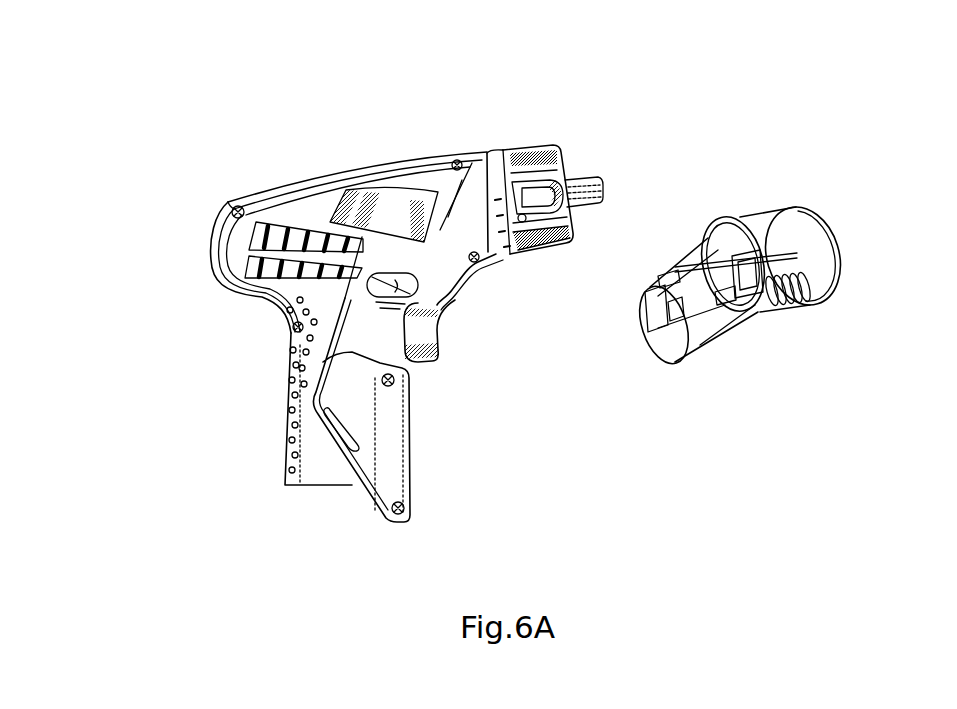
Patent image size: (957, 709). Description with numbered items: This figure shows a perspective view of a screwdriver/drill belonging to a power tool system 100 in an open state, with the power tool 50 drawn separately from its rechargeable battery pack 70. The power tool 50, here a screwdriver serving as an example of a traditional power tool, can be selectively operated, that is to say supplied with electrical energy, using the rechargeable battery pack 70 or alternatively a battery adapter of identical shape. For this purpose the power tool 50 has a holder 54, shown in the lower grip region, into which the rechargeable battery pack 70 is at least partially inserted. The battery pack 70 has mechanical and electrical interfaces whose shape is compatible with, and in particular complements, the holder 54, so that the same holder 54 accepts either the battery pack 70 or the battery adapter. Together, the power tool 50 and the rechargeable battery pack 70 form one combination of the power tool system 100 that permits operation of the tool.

The power tool system 100 is at (191, 109).
The power tool 50 is at (330, 154).
The holder 54 is at (328, 527).
The rechargeable battery pack 70 is at (708, 217).